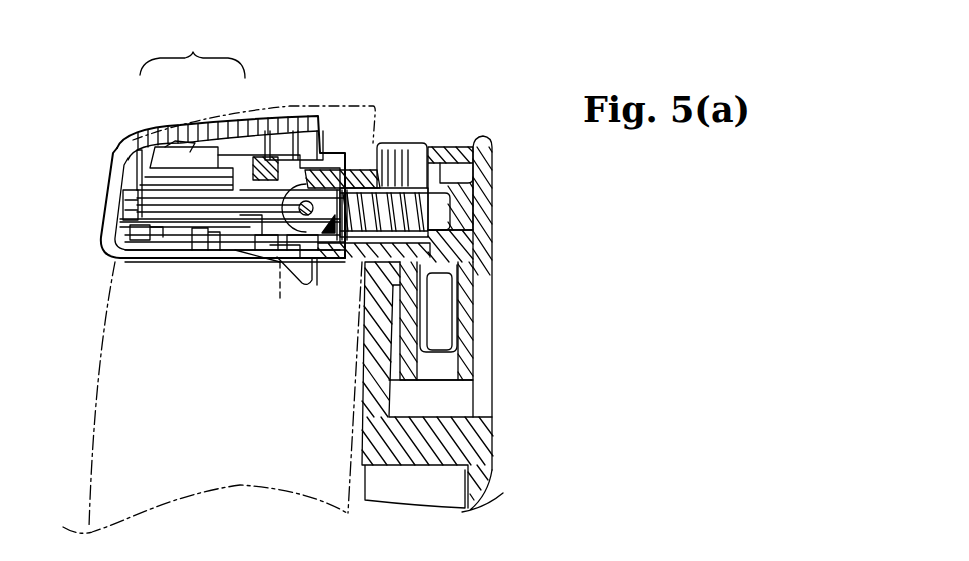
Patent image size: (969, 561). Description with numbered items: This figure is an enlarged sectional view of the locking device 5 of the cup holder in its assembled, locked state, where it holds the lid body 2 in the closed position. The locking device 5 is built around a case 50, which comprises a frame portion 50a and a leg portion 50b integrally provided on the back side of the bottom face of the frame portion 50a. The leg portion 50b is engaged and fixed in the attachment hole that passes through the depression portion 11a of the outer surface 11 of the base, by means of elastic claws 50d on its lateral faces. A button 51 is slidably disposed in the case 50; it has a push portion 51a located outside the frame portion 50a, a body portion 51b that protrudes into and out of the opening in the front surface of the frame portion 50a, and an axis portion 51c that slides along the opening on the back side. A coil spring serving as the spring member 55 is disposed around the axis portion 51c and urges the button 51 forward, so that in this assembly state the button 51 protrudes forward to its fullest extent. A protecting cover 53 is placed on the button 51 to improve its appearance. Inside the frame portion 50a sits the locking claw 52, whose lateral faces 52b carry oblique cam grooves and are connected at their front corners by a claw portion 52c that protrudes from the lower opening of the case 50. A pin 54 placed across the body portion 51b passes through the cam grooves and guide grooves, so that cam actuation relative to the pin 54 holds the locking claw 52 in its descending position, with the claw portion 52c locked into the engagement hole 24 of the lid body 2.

The lid body 2 is at (102, 394).
The locking device 5 is at (105, 161).
The outer surface 11 is at (493, 452).
The depression portion 11a is at (468, 415).
The engagement hole 24 is at (280, 285).
The case 50 is at (433, 148).
The frame portion 50a is at (256, 215).
The leg portion 50b is at (473, 308).
The elastic claws 50d is at (443, 282).
The button 51 is at (192, 50).
The push portion 51a is at (162, 162).
The body portion 51b is at (252, 215).
The axis portion 51c is at (440, 214).
The locking claw 52 is at (320, 200).
The lateral faces 52b is at (280, 262).
The claw portion 52c is at (283, 283).
The protecting cover 53 is at (115, 207).
The pin 54 is at (303, 201).
The spring member 55 is at (410, 186).